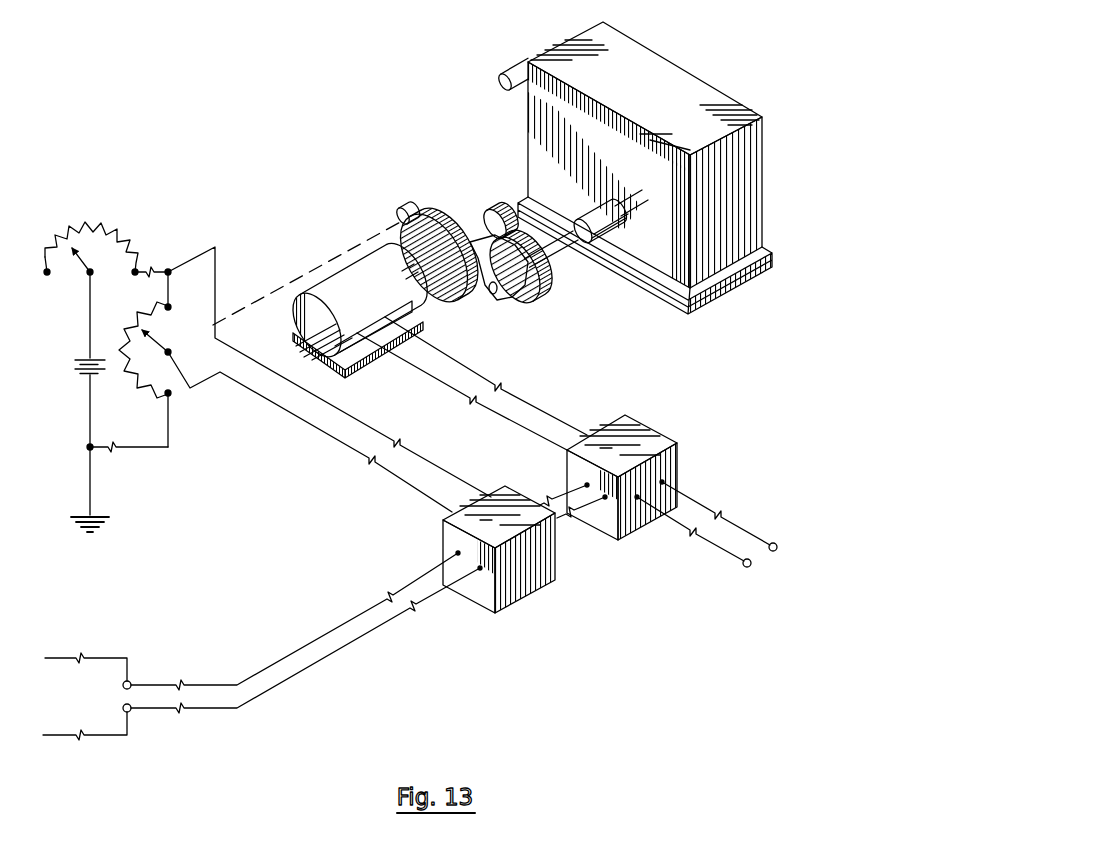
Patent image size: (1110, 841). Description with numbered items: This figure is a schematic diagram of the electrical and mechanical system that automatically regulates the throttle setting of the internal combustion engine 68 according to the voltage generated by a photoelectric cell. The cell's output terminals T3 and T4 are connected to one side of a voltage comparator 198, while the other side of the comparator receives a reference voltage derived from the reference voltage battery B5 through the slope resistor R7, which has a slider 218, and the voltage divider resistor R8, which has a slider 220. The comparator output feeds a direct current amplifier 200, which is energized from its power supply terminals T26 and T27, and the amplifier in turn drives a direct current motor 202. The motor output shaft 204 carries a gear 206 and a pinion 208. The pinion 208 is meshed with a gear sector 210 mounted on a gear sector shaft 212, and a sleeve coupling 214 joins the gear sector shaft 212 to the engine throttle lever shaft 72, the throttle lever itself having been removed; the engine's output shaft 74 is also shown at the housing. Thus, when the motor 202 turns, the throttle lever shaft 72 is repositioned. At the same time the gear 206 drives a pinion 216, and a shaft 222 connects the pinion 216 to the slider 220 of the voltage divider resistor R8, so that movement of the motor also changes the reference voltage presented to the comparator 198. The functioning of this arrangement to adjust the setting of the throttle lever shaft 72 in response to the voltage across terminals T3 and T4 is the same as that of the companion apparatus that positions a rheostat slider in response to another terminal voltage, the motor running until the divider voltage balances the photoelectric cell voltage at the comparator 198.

The internal combustion engine 68 is at (703, 61).
The output shaft 74 is at (520, 93).
The throttle lever shaft 72 is at (628, 221).
The sleeve coupling 214 is at (603, 206).
The gear sector shaft 212 is at (562, 262).
The gear sector 210 is at (537, 293).
The pinion 208 is at (478, 212).
The gear 206 is at (463, 300).
The motor output shaft 204 is at (428, 263).
The pinion 216 is at (413, 204).
The direct current motor 202 is at (296, 316).
The shaft 222 is at (312, 258).
The direct current amplifier 200 is at (670, 437).
The voltage comparator 198 is at (533, 597).
The power supply terminal T27 is at (776, 543).
The power supply terminal T26 is at (747, 567).
The output terminal T3 is at (122, 683).
The output terminal T4 is at (122, 711).
The slope resistor R7 is at (94, 222).
The voltage divider resistor R8 is at (138, 389).
The slider 218 is at (74, 268).
The slider 220 is at (163, 345).
The reference voltage battery B5 is at (82, 355).